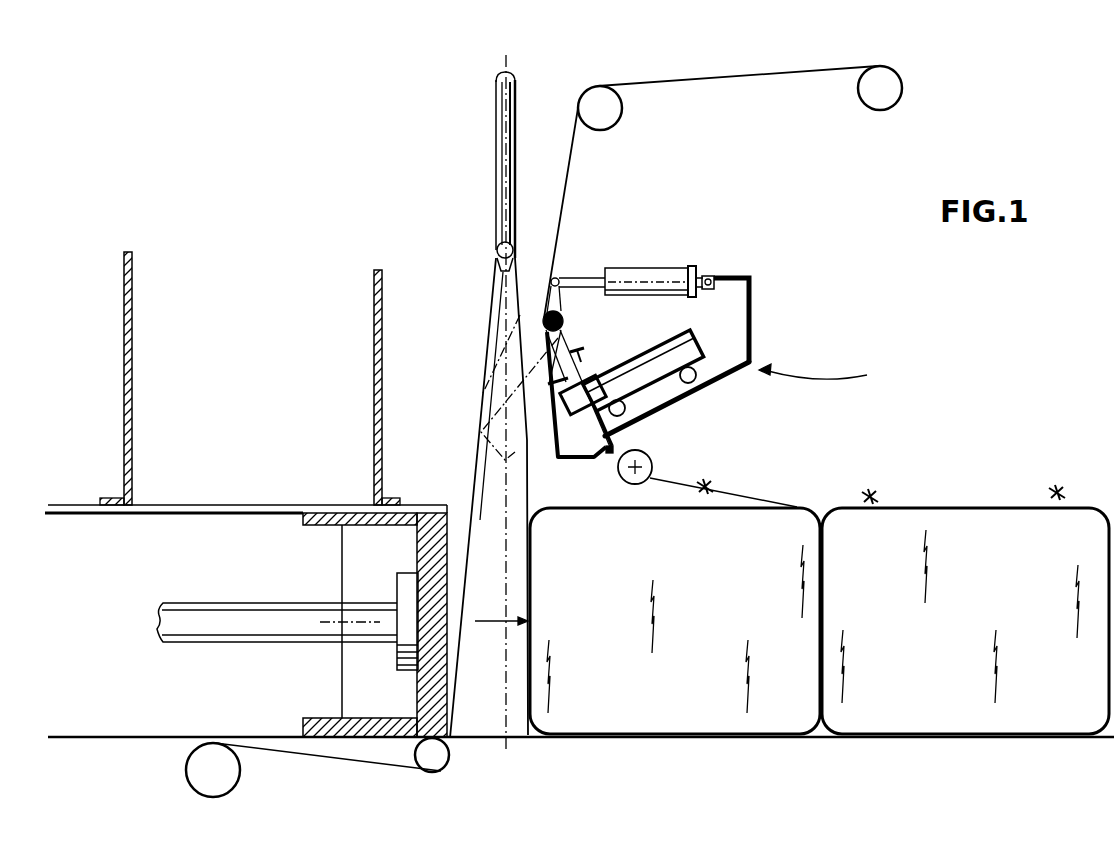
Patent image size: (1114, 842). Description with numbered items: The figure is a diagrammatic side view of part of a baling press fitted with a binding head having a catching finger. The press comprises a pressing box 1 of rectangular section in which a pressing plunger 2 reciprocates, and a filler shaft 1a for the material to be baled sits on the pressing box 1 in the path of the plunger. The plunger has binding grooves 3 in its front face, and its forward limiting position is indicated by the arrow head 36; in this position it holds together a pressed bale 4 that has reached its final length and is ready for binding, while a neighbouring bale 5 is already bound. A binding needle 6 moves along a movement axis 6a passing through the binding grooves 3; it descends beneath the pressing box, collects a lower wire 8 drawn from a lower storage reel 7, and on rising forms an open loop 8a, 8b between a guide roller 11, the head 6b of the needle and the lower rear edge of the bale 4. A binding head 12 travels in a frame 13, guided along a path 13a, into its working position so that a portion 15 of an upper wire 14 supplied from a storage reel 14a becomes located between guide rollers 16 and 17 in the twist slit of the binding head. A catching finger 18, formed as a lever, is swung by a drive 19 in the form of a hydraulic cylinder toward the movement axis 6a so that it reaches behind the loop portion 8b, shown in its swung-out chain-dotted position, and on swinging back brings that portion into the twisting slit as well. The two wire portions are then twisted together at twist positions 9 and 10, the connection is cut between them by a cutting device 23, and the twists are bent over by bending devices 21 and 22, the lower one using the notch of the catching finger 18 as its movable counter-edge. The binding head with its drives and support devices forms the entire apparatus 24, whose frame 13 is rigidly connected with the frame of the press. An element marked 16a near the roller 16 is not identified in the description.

The pressing box 1 is at (128, 537).
The filler shaft 1a is at (172, 268).
The pressing plunger 2 is at (435, 507).
The binding grooves 3 is at (483, 565).
The arrow head 36 is at (484, 624).
The bale 4 is at (770, 545).
The bale 5 is at (963, 530).
The binding needle 6 is at (453, 402).
The movement axis 6a is at (497, 70).
The head of binding needle 6b is at (497, 250).
The lower storage reel 7 is at (205, 773).
The lower wire 8 is at (320, 757).
The loop portion 8a is at (493, 307).
The loop portion 8b is at (524, 288).
The twist position 9 is at (712, 485).
The twist position 10 is at (880, 495).
The guide roller 11 is at (437, 762).
The binding head 12 is at (752, 332).
The frame 13 is at (740, 278).
The guide path 13a is at (720, 377).
The upper wire 14 is at (773, 76).
The storage reel 14a is at (903, 93).
The portion of upper wire 15 is at (568, 462).
The guide roller 16 is at (652, 461).
The roller contact point 16a is at (630, 485).
The guide roller 17 is at (565, 293).
The catching finger 18 is at (547, 396).
The drive 19 is at (646, 278).
The bending device 21 is at (564, 358).
The bending device 22 is at (605, 456).
The cutting device 23 is at (592, 362).
The apparatus 24 is at (826, 375).